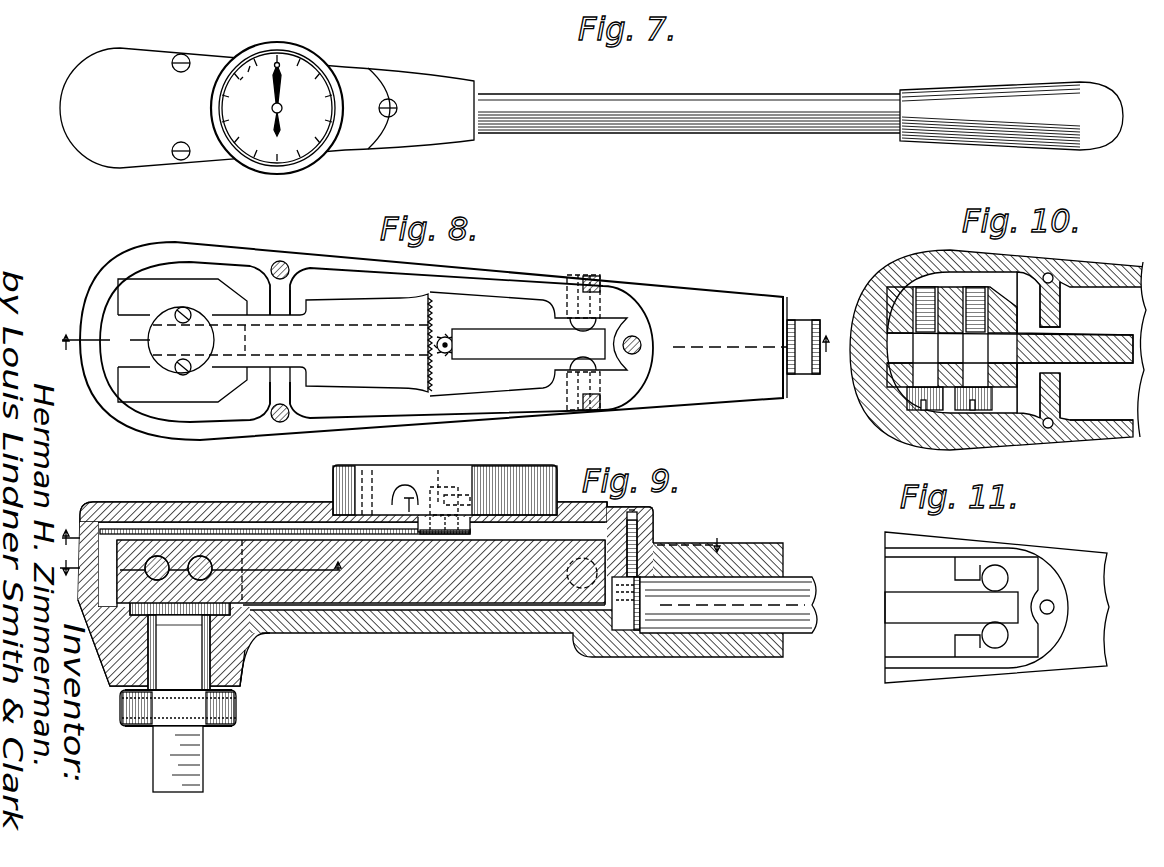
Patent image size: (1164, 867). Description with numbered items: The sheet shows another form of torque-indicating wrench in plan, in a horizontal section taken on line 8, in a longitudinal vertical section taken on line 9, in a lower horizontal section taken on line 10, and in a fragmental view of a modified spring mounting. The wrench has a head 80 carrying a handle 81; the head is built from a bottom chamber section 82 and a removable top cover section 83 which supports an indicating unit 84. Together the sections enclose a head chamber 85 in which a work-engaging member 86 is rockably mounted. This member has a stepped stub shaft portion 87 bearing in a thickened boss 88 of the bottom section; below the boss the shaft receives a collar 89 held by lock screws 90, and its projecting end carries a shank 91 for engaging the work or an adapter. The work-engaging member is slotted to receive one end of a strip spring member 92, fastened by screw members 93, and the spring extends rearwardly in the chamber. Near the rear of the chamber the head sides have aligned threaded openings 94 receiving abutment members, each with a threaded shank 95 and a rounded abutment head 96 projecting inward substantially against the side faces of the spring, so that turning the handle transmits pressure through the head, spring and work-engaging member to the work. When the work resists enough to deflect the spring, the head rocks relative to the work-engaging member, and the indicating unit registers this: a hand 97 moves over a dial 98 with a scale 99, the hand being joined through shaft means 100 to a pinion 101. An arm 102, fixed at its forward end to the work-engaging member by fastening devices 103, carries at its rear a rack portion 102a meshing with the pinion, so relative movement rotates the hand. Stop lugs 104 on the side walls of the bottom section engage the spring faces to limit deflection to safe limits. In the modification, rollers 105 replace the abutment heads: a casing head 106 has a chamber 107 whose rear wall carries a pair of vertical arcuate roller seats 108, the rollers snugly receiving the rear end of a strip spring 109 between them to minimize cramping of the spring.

In FIG. 7, the head 80 is at (591, 102).
In FIG. 7, the handle 81 is at (800, 106).
In FIG. 8, the handle 81 is at (798, 322).
In FIG. 9, the handle 81 is at (800, 630).
In FIG. 8, the bottom chamber section 82 is at (334, 262).
In FIG. 10, the bottom chamber section 82 is at (1104, 264).
In FIG. 9, the bottom chamber section 82 is at (467, 627).
In FIG. 7, the removable top cover section 83 is at (146, 52).
In FIG. 9, the removable top cover section 83 is at (222, 502).
In FIG. 7, the indicating unit 84 is at (326, 160).
In FIG. 9, the indicating unit 84 is at (542, 468).
In FIG. 10, the head chamber 85 is at (1103, 403).
In FIG. 9, the head chamber 85 is at (580, 530).
In FIG. 8, the work-engaging member 86 is at (150, 290).
In FIG. 9, the stepped stub shaft portion 87 is at (255, 652).
In FIG. 9, the boss 88 is at (252, 674).
In FIG. 9, the collar 89 is at (228, 726).
In FIG. 9, the lock screws 90 is at (238, 707).
In FIG. 9, the shank 91 is at (150, 748).
In FIG. 8, the strip spring member 92 is at (498, 330).
In FIG. 10, the strip spring member 92 is at (1095, 334).
In FIG. 9, the strip spring member 92 is at (517, 597).
In FIG. 10, the screw members 93 is at (968, 290).
In FIG. 9, the screw members 93 is at (192, 580).
In FIG. 8, the threaded openings 94 is at (576, 276).
In FIG. 8, the threaded shank 95 is at (603, 283).
In FIG. 8, the rounded abutment head 96 is at (584, 364).
In FIG. 9, the rounded abutment head 96 is at (560, 636).
In FIG. 7, the hand 97 is at (270, 92).
In FIG. 9, the hand 97 is at (437, 470).
In FIG. 7, the dial 98 is at (317, 66).
In FIG. 7, the scale 99 is at (250, 66).
In FIG. 9, the shaft means 100 is at (460, 490).
In FIG. 8, the pinion 101 is at (448, 335).
In FIG. 9, the pinion 101 is at (472, 532).
In FIG. 8, the arm 102 is at (368, 316).
In FIG. 9, the arm 102 is at (300, 528).
In FIG. 8, the rack portion 102a is at (438, 366).
In FIG. 8, the fastening devices 103 is at (187, 323).
In FIG. 9, the fastening devices 103 is at (172, 520).
In FIG. 8, the stop lugs 104 is at (294, 304).
In FIG. 10, the stop lugs 104 is at (1062, 382).
In FIG. 11, the rollers 105 is at (993, 587).
In FIG. 11, the casing head 106 is at (900, 533).
In FIG. 11, the chamber 107 is at (888, 566).
In FIG. 11, the roller seats 108 is at (982, 563).
In FIG. 11, the strip spring 109 is at (932, 615).
In FIG. 9, the section line 8— 8 is at (391, 532).
In FIG. 8, the section line 9— 9 is at (448, 343).
In FIG. 9, the section line 10— 10 is at (207, 568).